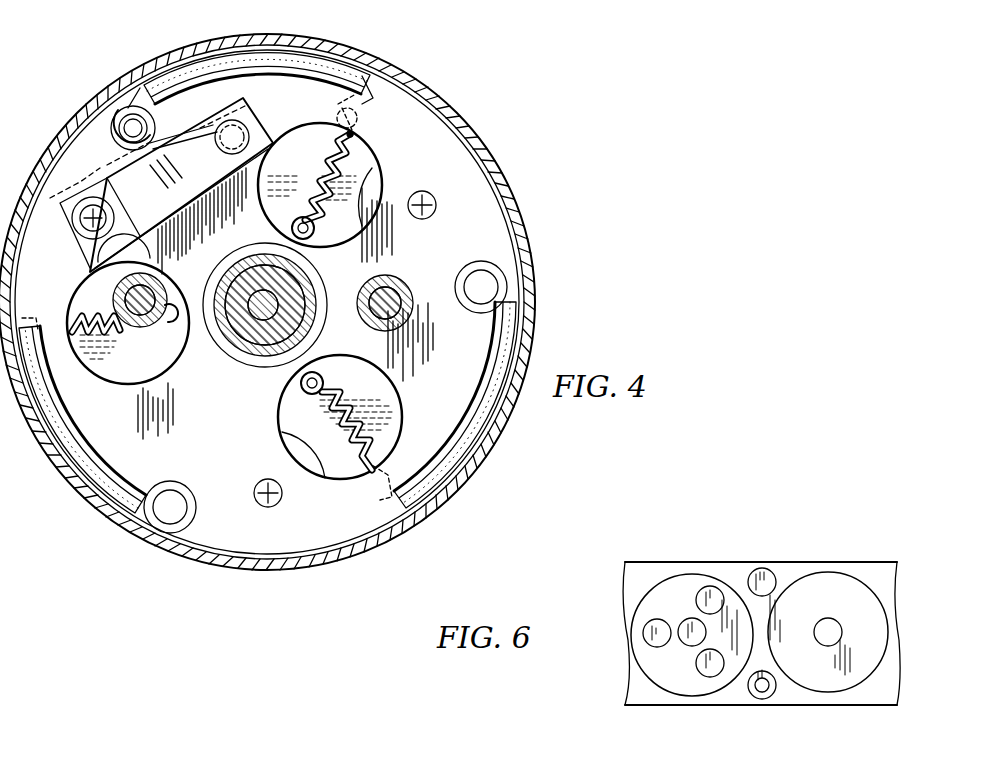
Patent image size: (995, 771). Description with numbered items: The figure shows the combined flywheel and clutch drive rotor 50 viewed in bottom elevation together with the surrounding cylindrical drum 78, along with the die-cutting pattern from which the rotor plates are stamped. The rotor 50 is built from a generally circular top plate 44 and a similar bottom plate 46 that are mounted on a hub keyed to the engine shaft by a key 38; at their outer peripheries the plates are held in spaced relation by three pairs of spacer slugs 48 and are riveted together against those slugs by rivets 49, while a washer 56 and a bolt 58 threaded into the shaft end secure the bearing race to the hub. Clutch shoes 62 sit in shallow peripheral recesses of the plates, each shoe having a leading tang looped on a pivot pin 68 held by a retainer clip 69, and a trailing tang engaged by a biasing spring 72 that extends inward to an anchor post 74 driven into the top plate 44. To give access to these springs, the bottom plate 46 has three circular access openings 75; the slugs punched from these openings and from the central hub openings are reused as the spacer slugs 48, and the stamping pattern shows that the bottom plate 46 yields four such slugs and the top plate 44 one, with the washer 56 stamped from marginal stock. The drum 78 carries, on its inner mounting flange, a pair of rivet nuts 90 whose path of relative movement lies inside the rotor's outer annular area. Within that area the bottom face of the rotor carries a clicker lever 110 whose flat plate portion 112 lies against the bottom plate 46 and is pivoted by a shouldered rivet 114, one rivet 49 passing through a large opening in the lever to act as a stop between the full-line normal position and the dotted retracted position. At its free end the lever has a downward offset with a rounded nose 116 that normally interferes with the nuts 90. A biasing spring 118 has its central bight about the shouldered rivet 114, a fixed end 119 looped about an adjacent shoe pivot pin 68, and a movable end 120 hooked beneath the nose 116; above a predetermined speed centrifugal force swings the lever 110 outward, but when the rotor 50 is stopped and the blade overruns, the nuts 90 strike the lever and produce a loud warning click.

In FIG. 4, the key 38 is at (265, 325).
In FIG. 6, the top plate 44 is at (838, 581).
In FIG. 4, the bottom plate 46 is at (486, 213).
In FIG. 6, the bottom plate 46 is at (681, 576).
In FIG. 4, the spacer slugs 48 is at (250, 301).
In FIG. 6, the spacer slugs 48 is at (713, 590).
In FIG. 4, the rivets 49 is at (86, 210).
In FIG. 4, the rotor 50 is at (298, 302).
In FIG. 6, the washer 56 is at (768, 694).
In FIG. 4, the bolt 58 is at (260, 317).
In FIG. 4, the clutch shoes 62 is at (333, 72).
In FIG. 4, the pivot pin 68 is at (262, 295).
In FIG. 4, the retainer clip 69 is at (110, 134).
In FIG. 4, the biasing spring 72 is at (312, 168).
In FIG. 4, the anchor post 74 is at (310, 230).
In FIG. 4, the access openings 75 is at (117, 373).
In FIG. 4, the cylindrical drum 78 is at (478, 152).
In FIG. 4, the rivet nuts 90 is at (408, 291).
In FIG. 4, the clicker lever 110 is at (157, 150).
In FIG. 4, the flat plate portion 112 is at (150, 202).
In FIG. 4, the shouldered rivet 114 is at (245, 110).
In FIG. 4, the nose 116 is at (148, 254).
In FIG. 4, the biasing spring 118 is at (180, 133).
In FIG. 4, the fixed end 119 is at (118, 120).
In FIG. 4, the movable end 120 is at (83, 254).